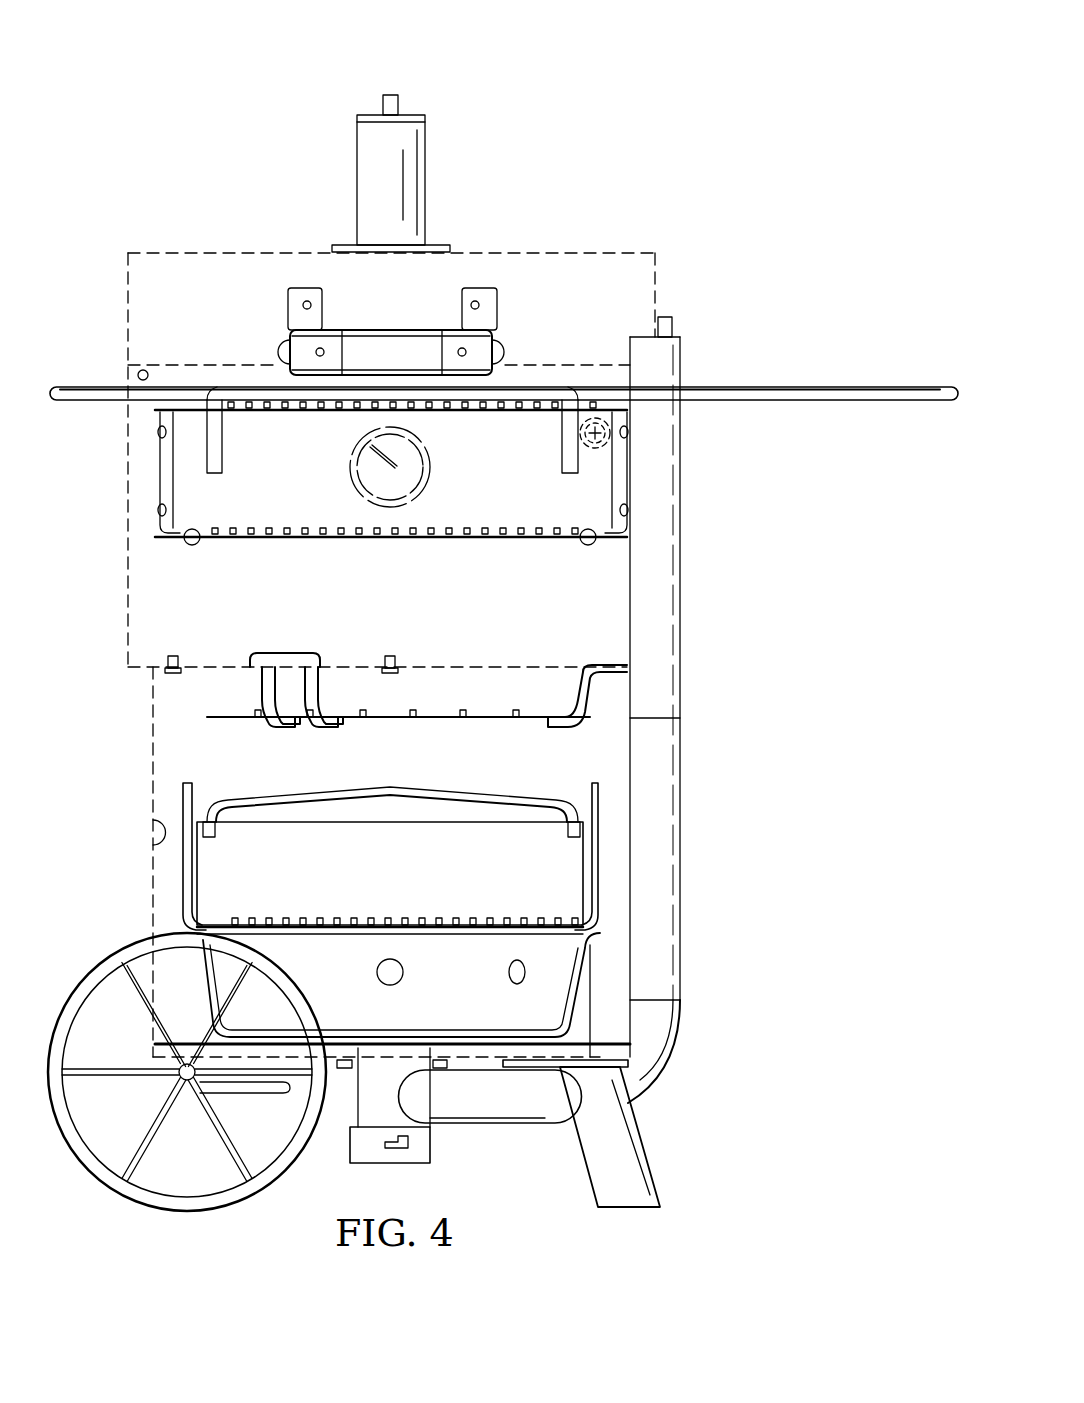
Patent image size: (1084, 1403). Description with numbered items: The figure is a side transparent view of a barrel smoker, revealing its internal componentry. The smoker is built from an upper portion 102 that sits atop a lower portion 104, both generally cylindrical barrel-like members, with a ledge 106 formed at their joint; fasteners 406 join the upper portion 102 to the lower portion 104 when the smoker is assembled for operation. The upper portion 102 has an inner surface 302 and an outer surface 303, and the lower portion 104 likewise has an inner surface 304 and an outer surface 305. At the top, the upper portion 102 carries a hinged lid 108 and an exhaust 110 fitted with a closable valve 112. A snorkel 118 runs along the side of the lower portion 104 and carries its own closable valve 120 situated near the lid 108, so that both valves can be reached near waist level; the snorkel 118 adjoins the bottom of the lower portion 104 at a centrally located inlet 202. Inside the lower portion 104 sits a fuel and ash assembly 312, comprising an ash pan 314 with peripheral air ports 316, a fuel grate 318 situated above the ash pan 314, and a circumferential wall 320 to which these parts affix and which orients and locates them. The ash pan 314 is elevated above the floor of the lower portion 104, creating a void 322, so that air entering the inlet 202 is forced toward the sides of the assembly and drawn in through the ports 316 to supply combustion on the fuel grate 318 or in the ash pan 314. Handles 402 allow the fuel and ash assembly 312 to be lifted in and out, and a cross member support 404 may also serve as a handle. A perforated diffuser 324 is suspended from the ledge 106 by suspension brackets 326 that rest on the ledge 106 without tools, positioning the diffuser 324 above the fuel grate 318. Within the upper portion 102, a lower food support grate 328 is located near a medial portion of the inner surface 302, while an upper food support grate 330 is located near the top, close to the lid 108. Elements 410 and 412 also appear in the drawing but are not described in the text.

The upper portion 102 is at (125, 462).
The lower portion 104 is at (153, 710).
The ledge 106 is at (130, 667).
The hinged lid 108 is at (190, 252).
The exhaust 110 is at (357, 182).
The closable valve 112 is at (378, 112).
The snorkel 118 is at (683, 548).
The closable valve 120 is at (676, 325).
The inlet 202 is at (378, 1063).
The inner surface 302 is at (128, 585).
The outer surface 303 is at (126, 516).
The inner surface 304 is at (150, 840).
The outer surface 305 is at (152, 782).
The fuel and ash assembly 312 is at (603, 880).
The ash pan 314 is at (357, 1028).
The air ports 316 is at (403, 970).
The fuel grate 318 is at (416, 918).
The circumferential wall 320 is at (587, 968).
The void 322 is at (477, 1047).
The diffuser 324 is at (440, 720).
The suspension brackets 326 is at (275, 652).
The lower food support grate 328 is at (497, 541).
The upper food support grate 330 is at (497, 415).
The handles 402 is at (195, 790).
The cross member support 404 is at (368, 788).
The fasteners 406 is at (392, 655).
The cooking chamber body 410 is at (335, 886).
The angled support leg 412 is at (592, 1023).